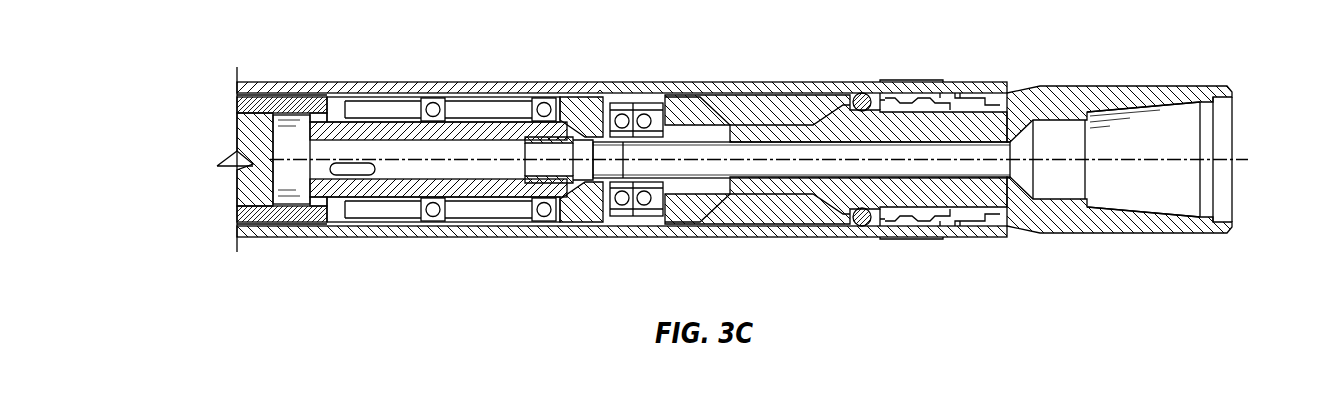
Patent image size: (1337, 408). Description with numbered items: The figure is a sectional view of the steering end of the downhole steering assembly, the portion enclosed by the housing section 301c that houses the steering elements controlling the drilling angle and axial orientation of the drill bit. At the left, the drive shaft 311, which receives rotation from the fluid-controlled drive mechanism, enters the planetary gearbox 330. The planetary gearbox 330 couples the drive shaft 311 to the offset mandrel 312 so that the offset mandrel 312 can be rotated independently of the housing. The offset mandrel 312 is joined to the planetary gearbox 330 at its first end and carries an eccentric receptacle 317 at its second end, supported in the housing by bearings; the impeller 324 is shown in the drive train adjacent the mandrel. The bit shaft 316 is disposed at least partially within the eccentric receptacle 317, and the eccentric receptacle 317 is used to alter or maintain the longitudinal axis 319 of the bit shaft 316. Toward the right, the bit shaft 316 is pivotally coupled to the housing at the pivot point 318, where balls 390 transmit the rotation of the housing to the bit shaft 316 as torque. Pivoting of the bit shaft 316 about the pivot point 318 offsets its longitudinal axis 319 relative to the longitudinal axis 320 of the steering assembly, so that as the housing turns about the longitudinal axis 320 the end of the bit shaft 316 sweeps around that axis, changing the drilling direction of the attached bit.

The housing section 301c is at (508, 237).
The drive shaft 311 is at (262, 150).
The offset mandrel 312 is at (481, 150).
The bit shaft 316 is at (820, 198).
The eccentric receptacle 317 is at (633, 218).
The pivot point 318 is at (882, 118).
The longitudinal axis of the bit shaft 319 is at (1181, 155).
The longitudinal axis of the steering assembly 320 is at (1185, 162).
The impeller 324 is at (615, 100).
The planetary gearbox 330 is at (305, 122).
The balls 390 is at (859, 95).